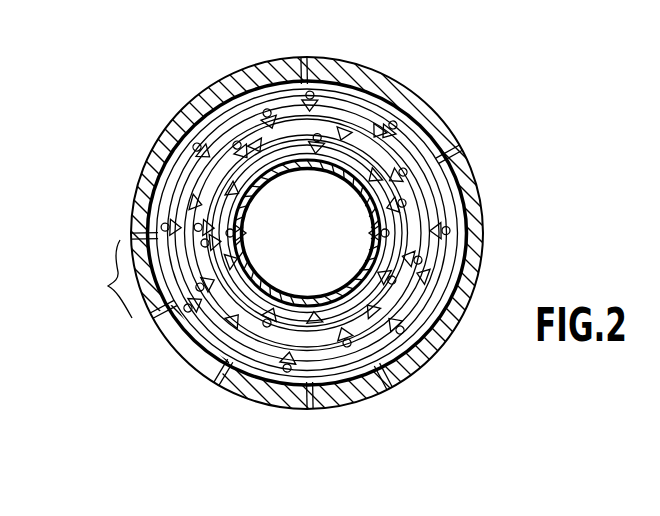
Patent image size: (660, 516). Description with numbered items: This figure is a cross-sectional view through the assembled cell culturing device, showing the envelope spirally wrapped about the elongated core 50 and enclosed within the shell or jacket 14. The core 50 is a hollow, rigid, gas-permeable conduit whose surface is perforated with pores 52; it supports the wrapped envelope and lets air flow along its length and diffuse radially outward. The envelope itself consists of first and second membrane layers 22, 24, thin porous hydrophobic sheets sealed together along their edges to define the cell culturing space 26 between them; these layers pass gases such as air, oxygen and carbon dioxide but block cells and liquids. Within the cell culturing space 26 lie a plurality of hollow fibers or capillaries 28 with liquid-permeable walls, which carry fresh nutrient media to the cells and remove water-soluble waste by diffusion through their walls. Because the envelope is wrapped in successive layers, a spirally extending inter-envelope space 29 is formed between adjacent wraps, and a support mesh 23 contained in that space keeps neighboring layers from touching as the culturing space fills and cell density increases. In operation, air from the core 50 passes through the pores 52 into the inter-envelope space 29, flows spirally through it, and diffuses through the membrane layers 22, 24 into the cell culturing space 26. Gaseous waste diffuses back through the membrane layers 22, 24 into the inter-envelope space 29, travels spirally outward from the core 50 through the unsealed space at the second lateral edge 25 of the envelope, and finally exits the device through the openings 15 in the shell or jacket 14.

The shell or jacket 14 is at (432, 357).
The openings 15 is at (109, 286).
The first membrane layer 22 is at (437, 173).
The support mesh 23 is at (355, 382).
The second membrane layer 24 is at (456, 204).
The second lateral edge 25 is at (296, 215).
The cell culturing space 26 is at (460, 262).
The hollow fibers or capillaries 28 is at (407, 128).
The inter-envelope space 29 is at (190, 207).
The elongated core 50 is at (383, 246).
The pores 52 is at (306, 233).